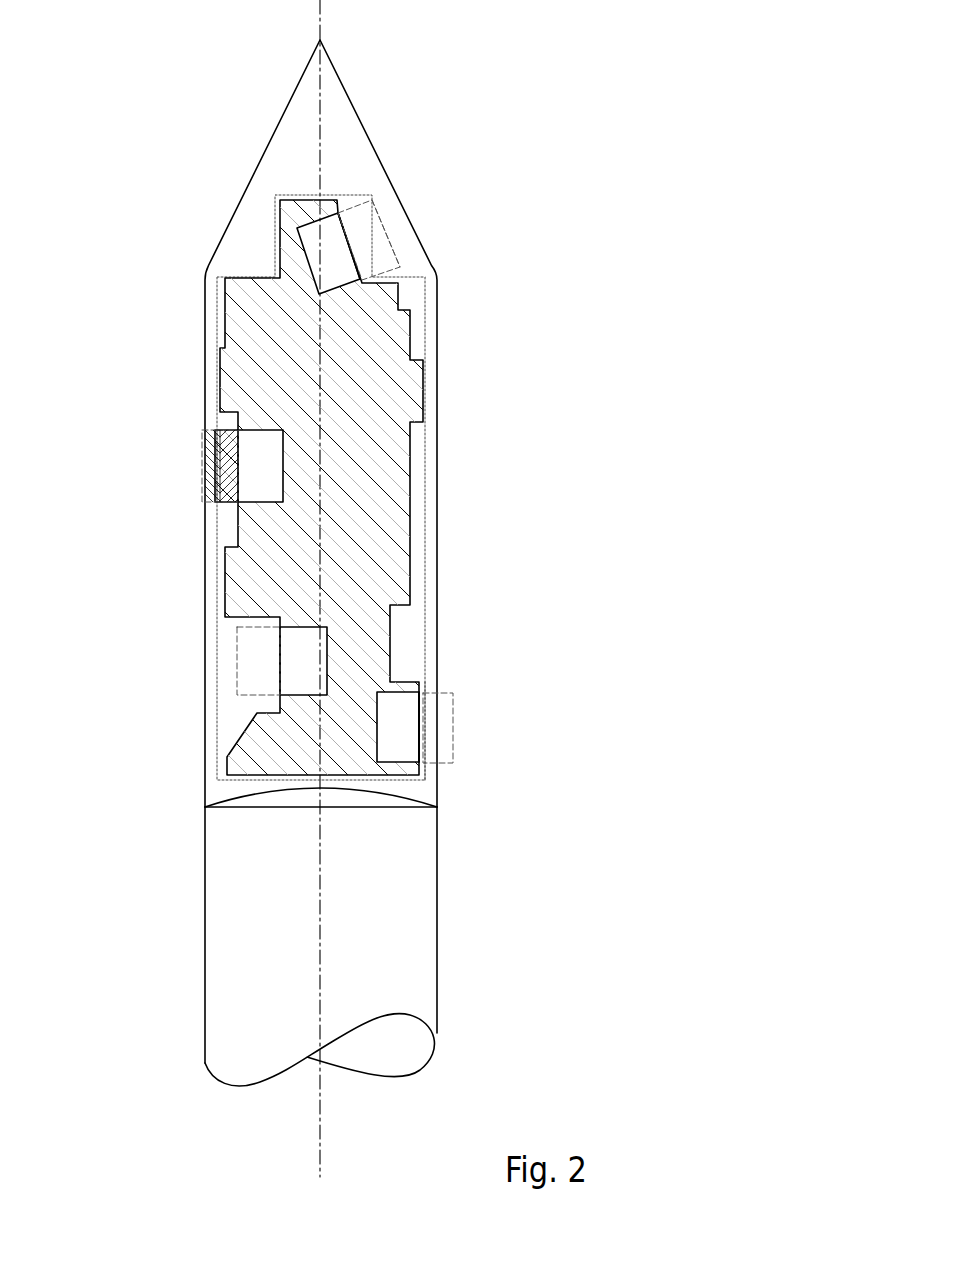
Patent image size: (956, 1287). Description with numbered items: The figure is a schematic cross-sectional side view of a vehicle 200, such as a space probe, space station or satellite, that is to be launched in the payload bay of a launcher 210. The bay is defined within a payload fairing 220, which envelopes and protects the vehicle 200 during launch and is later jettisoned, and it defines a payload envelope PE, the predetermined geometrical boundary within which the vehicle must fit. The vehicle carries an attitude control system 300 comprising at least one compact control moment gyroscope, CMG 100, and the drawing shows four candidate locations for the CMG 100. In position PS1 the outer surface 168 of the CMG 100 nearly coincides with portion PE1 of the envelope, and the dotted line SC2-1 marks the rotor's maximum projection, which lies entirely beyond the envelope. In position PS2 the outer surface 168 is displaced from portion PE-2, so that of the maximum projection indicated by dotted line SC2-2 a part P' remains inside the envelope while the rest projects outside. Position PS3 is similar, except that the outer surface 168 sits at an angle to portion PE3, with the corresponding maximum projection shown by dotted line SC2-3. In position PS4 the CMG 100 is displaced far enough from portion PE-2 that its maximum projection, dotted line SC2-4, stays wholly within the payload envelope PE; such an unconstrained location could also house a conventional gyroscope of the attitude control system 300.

The attitude control system 300 is at (523, 407).
The payload fairing 220 is at (437, 640).
The launcher 210 is at (437, 918).
The vehicle 200 is at (403, 580).
The payload envelope PE is at (423, 622).
The control moment gyroscope 100 is at (328, 233).
The outer surface 168 is at (348, 230).
The first position PS1 is at (398, 727).
The second position PS2 is at (260, 466).
The third position PS3 is at (328, 253).
The fourth position PS4 is at (303, 661).
The portion of payload envelope PE1 is at (425, 737).
The portion of payload envelope PE-2 is at (207, 492).
The portion of payload envelope PE3 is at (370, 237).
The second spatial configuration dotted line SC2-1 is at (453, 725).
The second spatial configuration dotted line SC2-2 is at (207, 477).
The second spatial configuration dotted line SC2-3 is at (397, 253).
The second spatial configuration dotted line SC2-4 is at (237, 683).
The part of maximum projection P' is at (197, 446).